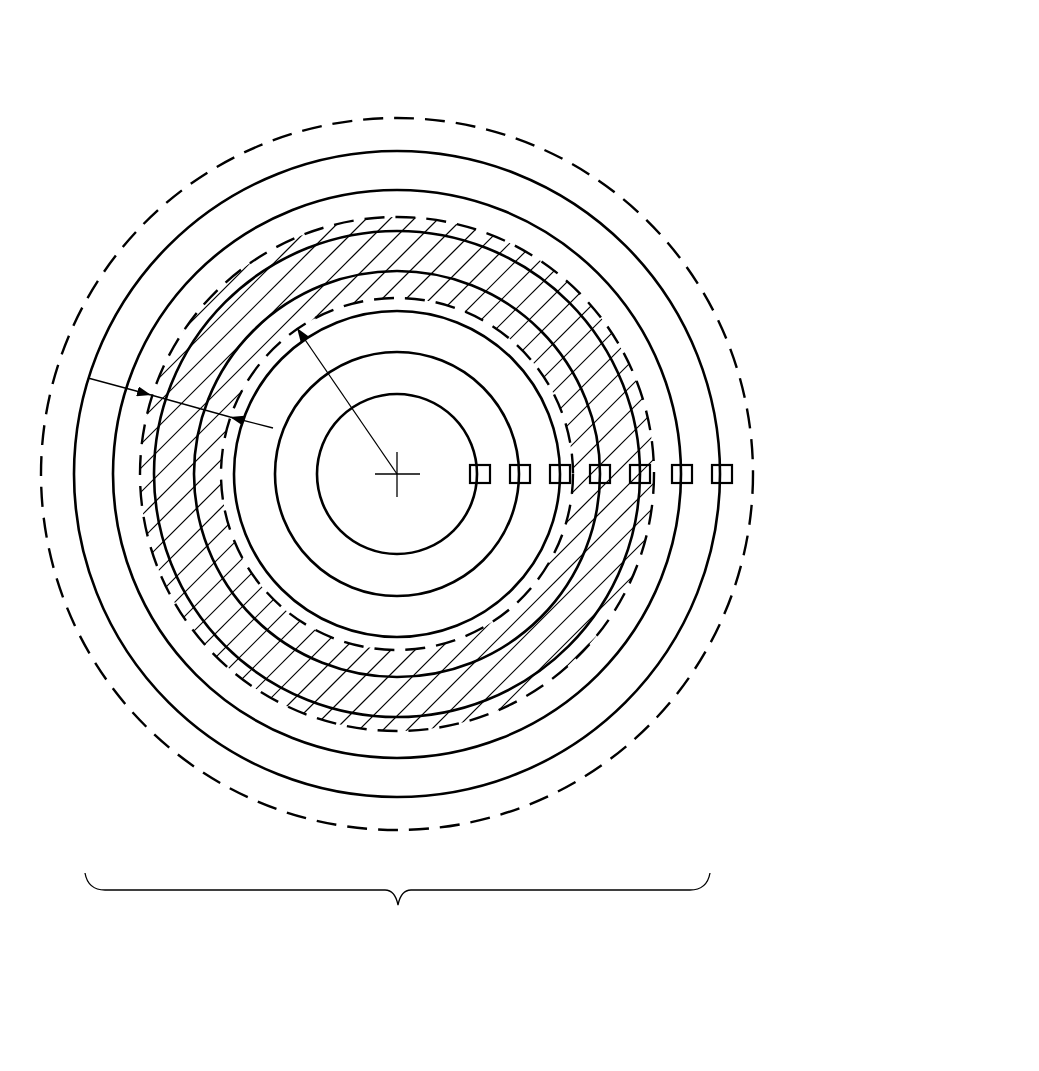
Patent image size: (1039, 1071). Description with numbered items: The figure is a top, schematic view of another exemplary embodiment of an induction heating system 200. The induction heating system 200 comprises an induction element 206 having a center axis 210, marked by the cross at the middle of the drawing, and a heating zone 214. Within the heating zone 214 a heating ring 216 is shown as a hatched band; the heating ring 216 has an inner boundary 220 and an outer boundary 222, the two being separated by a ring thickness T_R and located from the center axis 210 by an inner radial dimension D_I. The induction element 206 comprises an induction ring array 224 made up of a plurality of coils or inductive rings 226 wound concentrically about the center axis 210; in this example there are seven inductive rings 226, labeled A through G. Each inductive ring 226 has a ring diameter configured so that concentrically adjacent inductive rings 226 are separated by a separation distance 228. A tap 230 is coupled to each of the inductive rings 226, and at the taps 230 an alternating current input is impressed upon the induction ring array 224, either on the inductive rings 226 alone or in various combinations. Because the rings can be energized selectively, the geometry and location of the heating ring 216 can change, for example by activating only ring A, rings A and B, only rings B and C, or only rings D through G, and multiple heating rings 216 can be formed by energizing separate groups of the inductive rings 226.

The induction heating system 200 is at (645, 97).
The induction element 206 is at (712, 295).
The center axis 210 is at (380, 476).
The heating zone 214 is at (150, 695).
The heating ring 216 is at (240, 255).
The inner boundary 220 is at (386, 302).
The outer boundary 222 is at (337, 220).
The induction ring array 224 is at (397, 908).
The inductive rings 226 is at (647, 683).
The separation distance 228 is at (592, 260).
The tap 230 is at (732, 474).